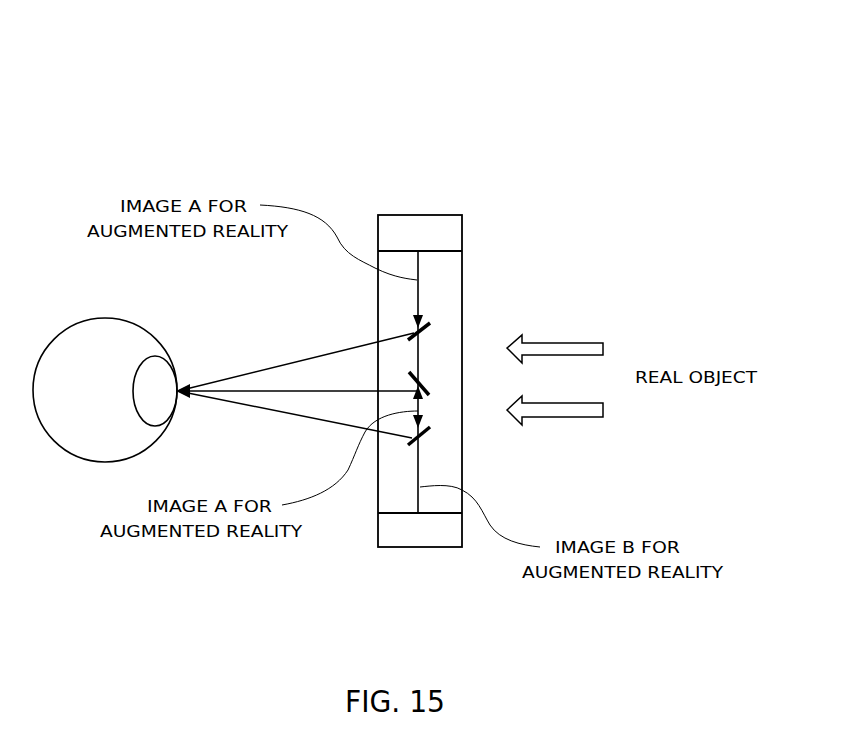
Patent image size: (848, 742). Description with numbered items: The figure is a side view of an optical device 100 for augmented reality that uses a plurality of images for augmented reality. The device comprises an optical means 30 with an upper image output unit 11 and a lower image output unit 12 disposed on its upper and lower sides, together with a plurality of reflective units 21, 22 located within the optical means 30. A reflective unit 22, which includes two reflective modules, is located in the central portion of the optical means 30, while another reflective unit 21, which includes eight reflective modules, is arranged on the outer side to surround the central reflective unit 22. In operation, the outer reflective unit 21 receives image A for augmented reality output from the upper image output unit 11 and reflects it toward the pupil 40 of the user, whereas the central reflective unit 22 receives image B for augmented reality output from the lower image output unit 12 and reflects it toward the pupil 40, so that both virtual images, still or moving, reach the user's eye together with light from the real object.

The optical device for augmented reality 100 is at (537, 112).
The upper image output unit 11 is at (420, 214).
The lower image output unit 12 is at (430, 548).
The reflective unit 21 is at (410, 338).
The reflective unit 22 is at (420, 374).
The optical means 30 is at (462, 283).
The pupil 40 is at (176, 369).